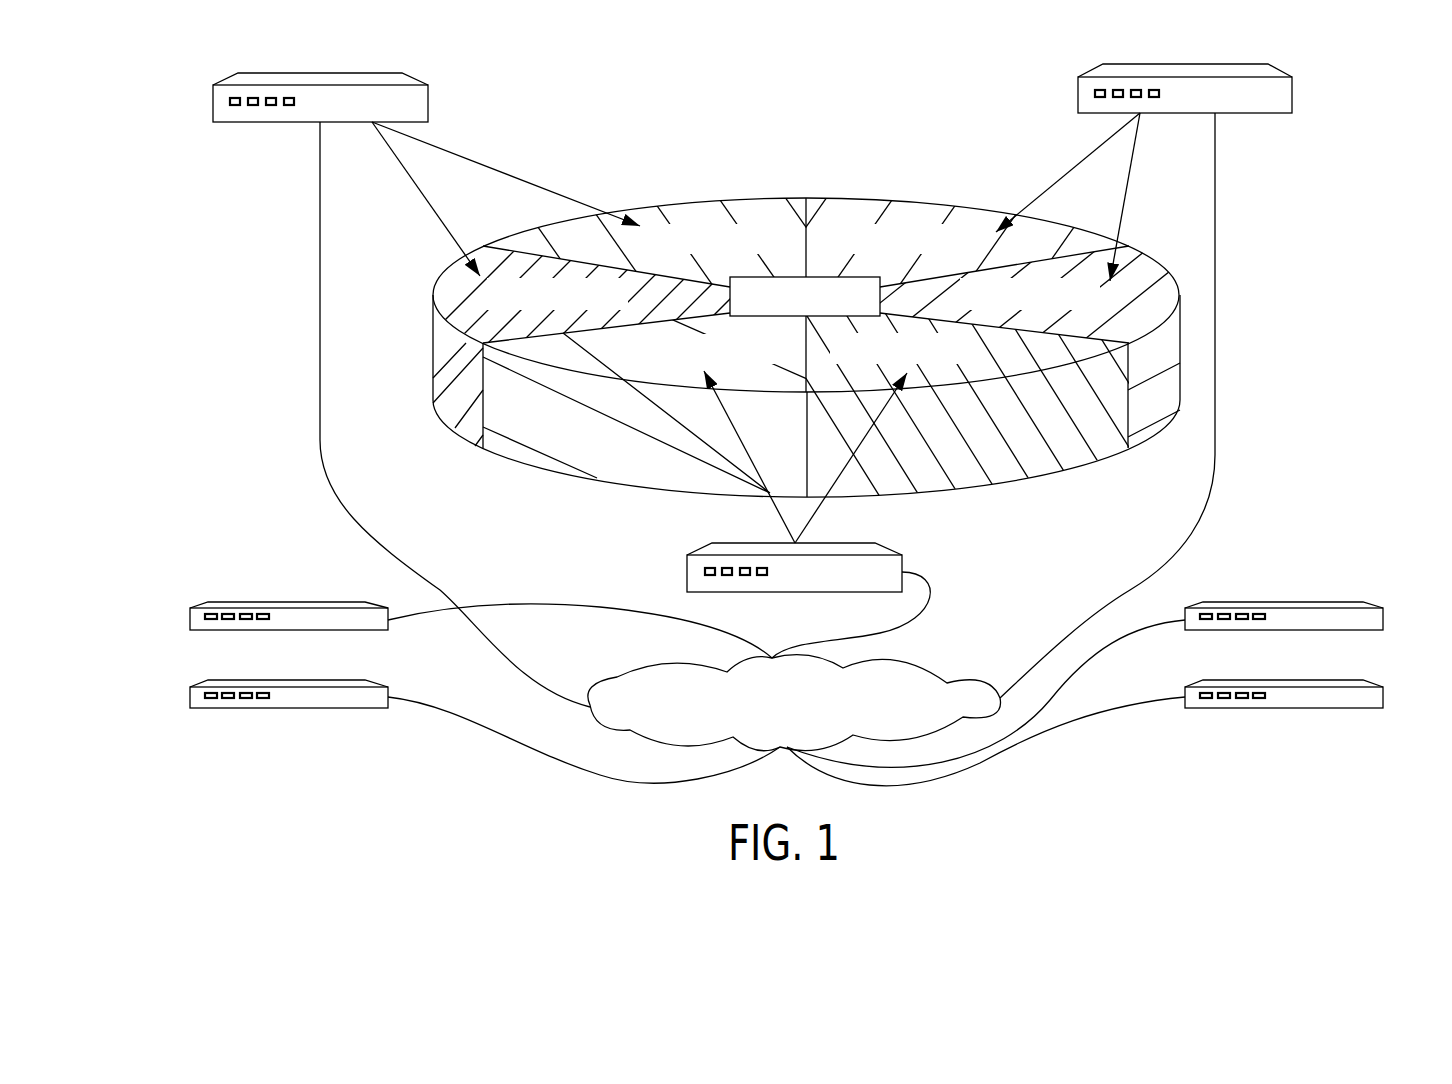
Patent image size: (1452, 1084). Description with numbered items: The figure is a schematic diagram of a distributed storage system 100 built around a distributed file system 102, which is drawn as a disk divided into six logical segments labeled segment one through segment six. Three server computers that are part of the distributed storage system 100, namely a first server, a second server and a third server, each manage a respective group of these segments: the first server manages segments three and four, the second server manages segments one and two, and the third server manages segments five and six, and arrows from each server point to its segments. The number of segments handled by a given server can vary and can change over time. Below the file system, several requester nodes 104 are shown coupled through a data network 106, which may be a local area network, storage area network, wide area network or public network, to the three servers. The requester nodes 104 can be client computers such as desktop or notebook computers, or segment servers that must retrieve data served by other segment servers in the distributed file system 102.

The distributed storage system 100 is at (664, 112).
The distributed file system 102 is at (795, 277).
The requester nodes 104 is at (210, 632).
The data network 106 is at (936, 667).